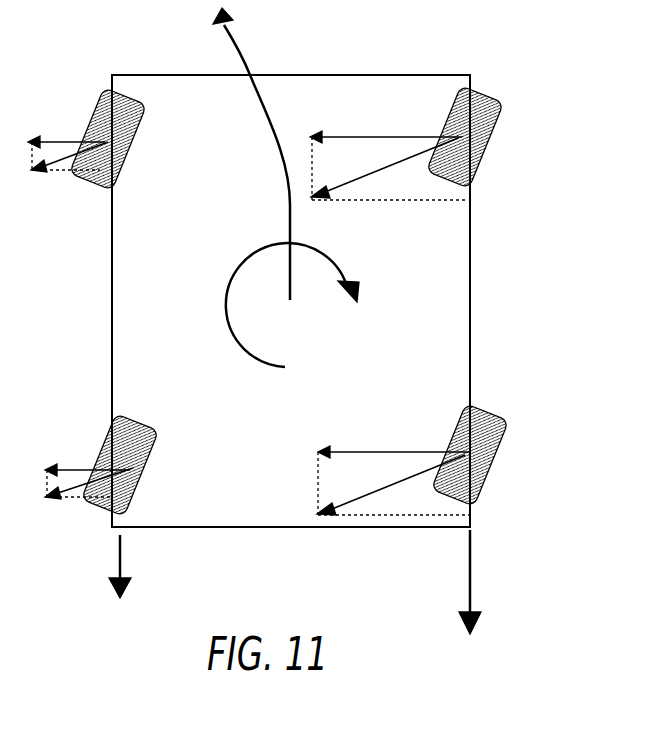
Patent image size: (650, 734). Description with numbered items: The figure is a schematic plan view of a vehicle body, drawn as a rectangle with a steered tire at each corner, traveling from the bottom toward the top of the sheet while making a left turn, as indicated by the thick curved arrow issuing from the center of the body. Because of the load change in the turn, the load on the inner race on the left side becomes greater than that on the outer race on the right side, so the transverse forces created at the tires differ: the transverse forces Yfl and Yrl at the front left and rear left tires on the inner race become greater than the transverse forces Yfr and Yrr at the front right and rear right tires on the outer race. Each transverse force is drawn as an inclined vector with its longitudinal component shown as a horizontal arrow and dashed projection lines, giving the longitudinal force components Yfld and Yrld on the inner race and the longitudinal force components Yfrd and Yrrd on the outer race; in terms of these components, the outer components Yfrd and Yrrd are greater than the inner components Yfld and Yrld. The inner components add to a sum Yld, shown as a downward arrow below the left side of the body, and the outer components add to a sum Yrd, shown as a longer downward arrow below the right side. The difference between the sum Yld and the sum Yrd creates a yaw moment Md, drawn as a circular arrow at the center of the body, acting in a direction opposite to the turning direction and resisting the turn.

The longitudinal force component Yfld is at (105, 152).
The transverse force Yfl is at (68, 153).
The longitudinal force component Yfrd is at (480, 178).
The transverse force Yfr is at (402, 167).
The yaw moment Md is at (267, 305).
The longitudinal force component Yrld is at (147, 470).
The transverse force Yrl is at (83, 488).
The longitudinal force component Yrrd is at (500, 462).
The transverse force Yrr is at (400, 480).
The sum of longitudinal force components Yld is at (120, 583).
The sum of longitudinal force components Yrd is at (471, 600).